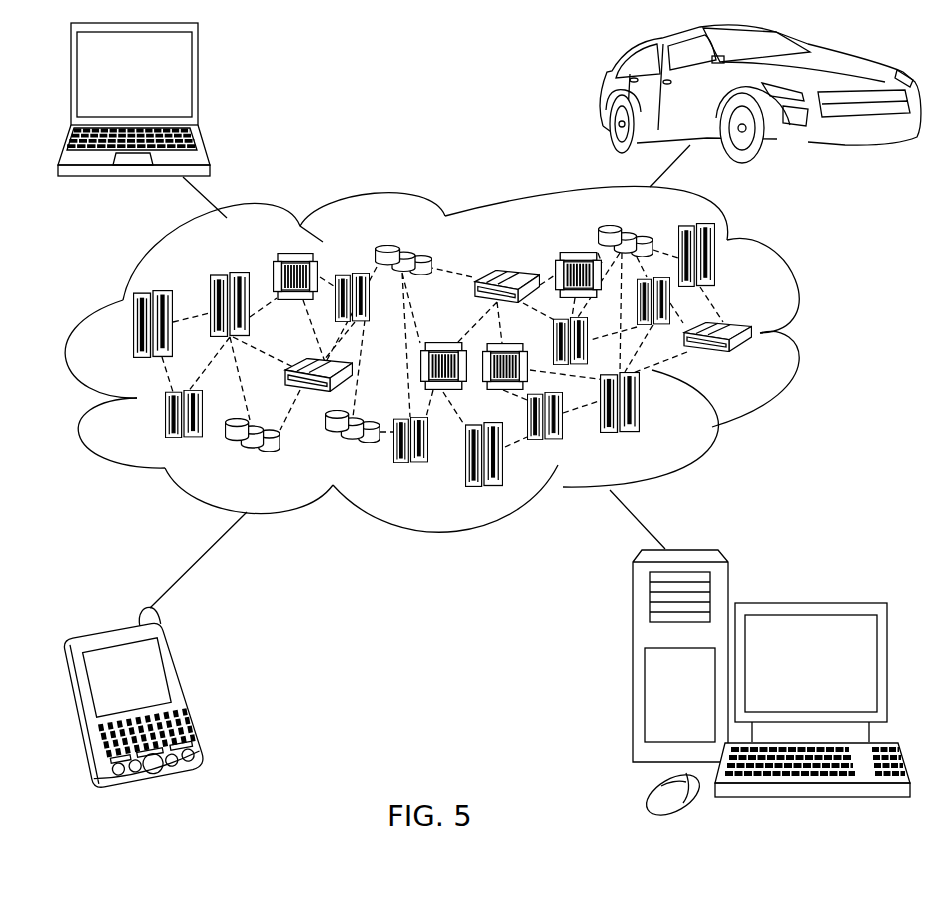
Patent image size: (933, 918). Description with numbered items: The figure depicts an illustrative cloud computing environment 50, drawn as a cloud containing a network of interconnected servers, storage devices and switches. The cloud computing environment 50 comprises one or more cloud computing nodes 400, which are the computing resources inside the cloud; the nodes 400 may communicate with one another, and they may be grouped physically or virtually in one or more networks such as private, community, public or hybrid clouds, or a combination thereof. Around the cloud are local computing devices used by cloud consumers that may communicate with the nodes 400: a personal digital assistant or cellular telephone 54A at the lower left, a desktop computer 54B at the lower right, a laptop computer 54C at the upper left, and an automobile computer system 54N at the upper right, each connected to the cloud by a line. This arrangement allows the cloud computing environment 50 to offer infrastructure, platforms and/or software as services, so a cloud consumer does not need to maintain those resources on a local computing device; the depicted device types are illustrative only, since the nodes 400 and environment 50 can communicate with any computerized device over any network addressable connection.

The laptop computer 54C is at (198, 80).
The automobile computer system 54N is at (603, 99).
The personal digital assistant or cellular telephone 54A is at (188, 687).
The desktop computer 54B is at (807, 603).
The cloud computing environment 50 is at (808, 333).
The cloud computing nodes 400 is at (753, 363).